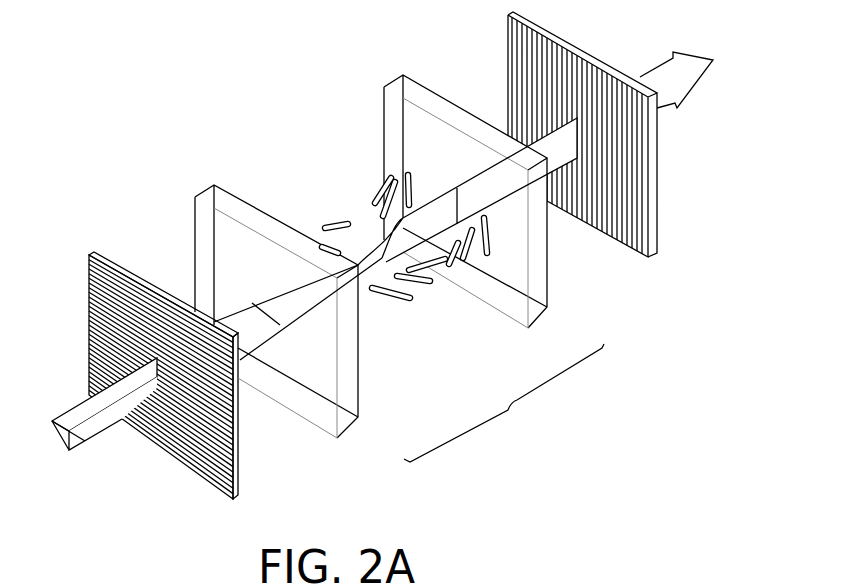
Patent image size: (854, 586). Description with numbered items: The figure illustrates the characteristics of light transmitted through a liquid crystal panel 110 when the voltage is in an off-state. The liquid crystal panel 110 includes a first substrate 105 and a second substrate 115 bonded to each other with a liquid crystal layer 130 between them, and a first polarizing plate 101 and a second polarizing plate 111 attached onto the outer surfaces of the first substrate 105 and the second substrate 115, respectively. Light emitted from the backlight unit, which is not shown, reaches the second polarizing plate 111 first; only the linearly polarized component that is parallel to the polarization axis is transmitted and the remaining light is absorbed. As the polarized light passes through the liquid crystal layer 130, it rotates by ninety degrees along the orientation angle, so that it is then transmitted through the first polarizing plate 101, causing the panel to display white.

The first polarizing plate 101 is at (657, 247).
The first substrate 105 is at (547, 309).
The liquid crystal panel 110 is at (504, 403).
The second polarizing plate 111 is at (237, 489).
The second substrate 115 is at (358, 419).
The liquid crystal layer 130 is at (400, 303).